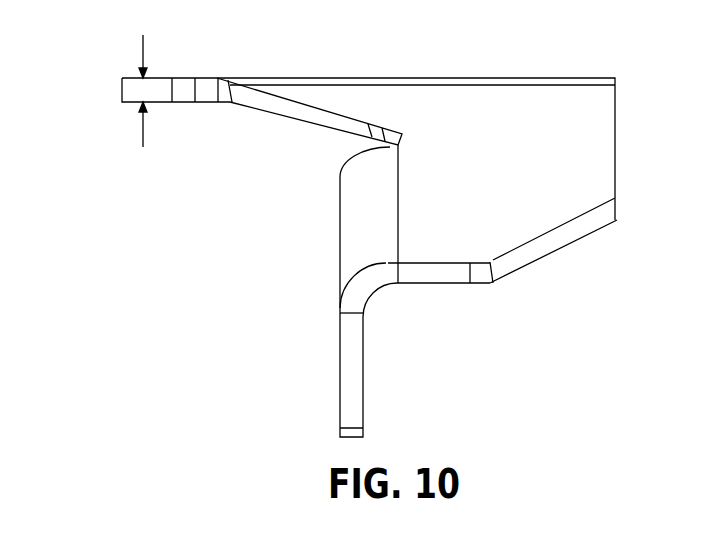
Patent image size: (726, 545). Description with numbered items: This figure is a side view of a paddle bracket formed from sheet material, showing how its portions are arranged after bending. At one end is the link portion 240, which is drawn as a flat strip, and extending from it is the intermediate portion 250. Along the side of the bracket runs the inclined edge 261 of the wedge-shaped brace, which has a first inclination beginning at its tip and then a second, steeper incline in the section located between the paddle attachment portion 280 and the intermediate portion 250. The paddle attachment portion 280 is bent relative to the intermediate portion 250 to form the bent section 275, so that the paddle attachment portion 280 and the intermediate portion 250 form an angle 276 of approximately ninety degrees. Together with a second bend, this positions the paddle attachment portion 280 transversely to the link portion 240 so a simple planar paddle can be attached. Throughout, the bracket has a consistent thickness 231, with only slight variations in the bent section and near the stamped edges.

The consistent thickness 231 is at (144, 58).
The link portion 240 is at (165, 82).
The intermediate portion 250 is at (508, 108).
The inclined edge 261 is at (297, 110).
The bent section 275 is at (378, 272).
The angle 276 is at (410, 288).
The paddle attachment portion 280 is at (347, 392).